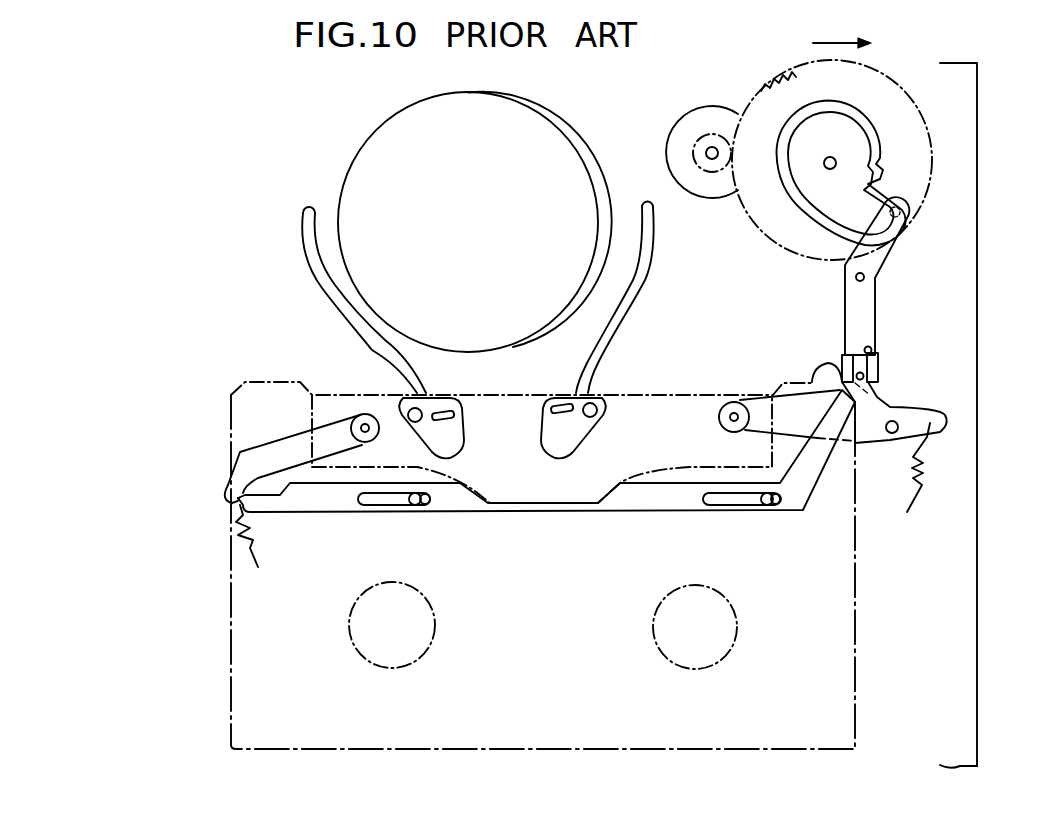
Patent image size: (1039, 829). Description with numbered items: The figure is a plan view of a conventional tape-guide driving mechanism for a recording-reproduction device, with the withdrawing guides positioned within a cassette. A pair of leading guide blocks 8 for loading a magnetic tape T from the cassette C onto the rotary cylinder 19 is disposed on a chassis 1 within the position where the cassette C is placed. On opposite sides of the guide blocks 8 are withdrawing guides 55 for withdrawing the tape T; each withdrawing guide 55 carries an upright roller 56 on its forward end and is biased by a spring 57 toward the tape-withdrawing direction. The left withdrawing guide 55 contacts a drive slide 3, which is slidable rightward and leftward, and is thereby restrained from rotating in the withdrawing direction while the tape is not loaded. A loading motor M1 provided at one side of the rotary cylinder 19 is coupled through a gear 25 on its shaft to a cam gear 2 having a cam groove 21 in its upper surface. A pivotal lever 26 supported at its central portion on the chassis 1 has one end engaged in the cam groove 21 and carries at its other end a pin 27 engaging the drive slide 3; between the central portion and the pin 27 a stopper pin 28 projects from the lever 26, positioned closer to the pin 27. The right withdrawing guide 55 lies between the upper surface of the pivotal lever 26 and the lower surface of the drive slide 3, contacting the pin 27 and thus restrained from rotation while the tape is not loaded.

The chassis 1 is at (960, 135).
The cam gear 2 is at (880, 75).
The drive slide 3 is at (812, 475).
The leading guide block 8 is at (458, 407).
The rotary cylinder 19 is at (508, 130).
The cam groove 21 is at (880, 165).
The gear 25 is at (700, 175).
The pivotal lever 26 is at (865, 315).
The pin 27 is at (880, 382).
The stopper pin 28 is at (873, 350).
The withdrawing guide 55 is at (273, 452).
The upright roller 56 is at (358, 415).
The spring 57 is at (247, 545).
The loading motor M1 is at (692, 103).
The cassette C is at (860, 628).
The magnetic tape T is at (660, 393).